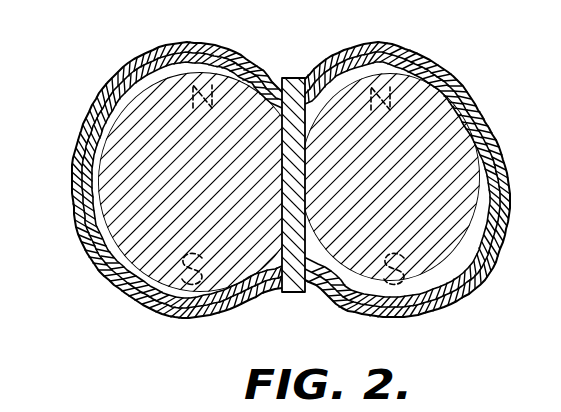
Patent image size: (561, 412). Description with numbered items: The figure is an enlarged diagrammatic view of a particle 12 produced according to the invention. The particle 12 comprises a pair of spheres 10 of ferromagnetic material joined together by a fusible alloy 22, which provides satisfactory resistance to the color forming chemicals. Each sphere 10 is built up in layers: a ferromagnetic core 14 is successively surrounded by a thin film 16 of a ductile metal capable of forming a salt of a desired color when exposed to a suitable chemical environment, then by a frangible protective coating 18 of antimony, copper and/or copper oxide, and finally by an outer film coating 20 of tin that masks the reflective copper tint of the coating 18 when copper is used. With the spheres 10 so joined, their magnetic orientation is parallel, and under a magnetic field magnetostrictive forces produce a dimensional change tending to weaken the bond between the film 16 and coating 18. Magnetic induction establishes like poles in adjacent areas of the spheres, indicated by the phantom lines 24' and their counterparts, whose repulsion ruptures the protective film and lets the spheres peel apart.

The sphere 10 is at (280, 193).
The particle 12 is at (288, 211).
The ferromagnetic core 14 is at (120, 244).
The thin film 16 is at (96, 205).
The frangible protective coating 18 is at (88, 163).
The outer film coating 20 is at (106, 91).
The fusible alloy 22 is at (288, 293).
The phantom lines 24' is at (321, 58).